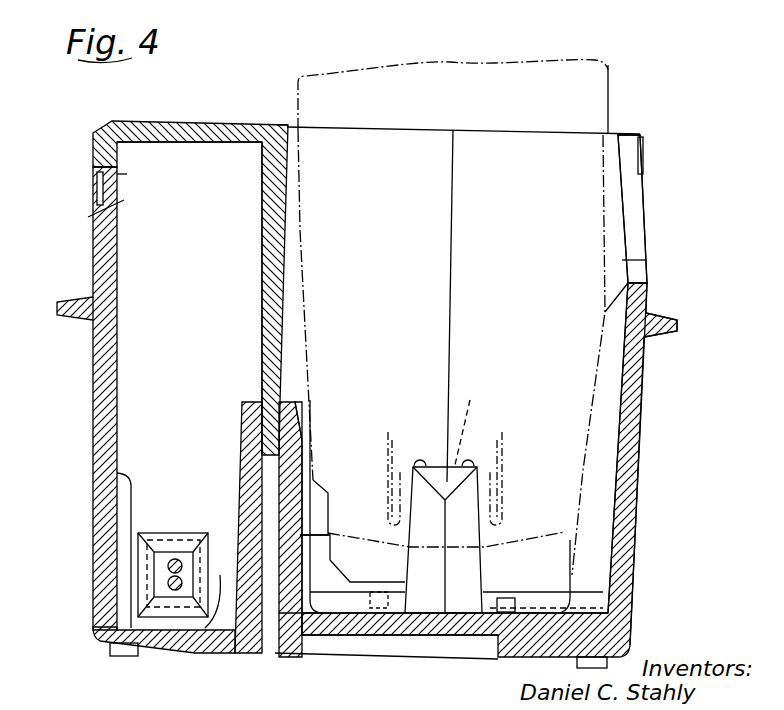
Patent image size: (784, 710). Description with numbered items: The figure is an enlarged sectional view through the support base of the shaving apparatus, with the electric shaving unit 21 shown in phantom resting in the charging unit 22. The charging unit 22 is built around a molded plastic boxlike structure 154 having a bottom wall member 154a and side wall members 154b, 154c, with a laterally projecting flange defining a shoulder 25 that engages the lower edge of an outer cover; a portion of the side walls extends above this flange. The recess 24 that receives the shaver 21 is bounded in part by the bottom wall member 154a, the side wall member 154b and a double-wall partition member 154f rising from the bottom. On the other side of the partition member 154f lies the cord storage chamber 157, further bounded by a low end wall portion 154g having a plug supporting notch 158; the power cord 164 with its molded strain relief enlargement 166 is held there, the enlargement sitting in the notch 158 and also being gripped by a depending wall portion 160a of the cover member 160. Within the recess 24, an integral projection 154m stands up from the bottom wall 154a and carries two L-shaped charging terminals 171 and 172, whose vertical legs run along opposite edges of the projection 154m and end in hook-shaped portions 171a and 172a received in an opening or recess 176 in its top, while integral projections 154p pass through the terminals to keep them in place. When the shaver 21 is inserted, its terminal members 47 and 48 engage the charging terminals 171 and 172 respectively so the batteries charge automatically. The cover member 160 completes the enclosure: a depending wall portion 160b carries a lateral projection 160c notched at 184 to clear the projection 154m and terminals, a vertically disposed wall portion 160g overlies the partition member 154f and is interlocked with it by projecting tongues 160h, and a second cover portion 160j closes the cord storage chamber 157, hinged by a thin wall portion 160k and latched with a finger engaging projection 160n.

The electric shaving unit 21 is at (617, 86).
The charging unit 22 is at (645, 462).
The recess 24 is at (613, 257).
The shoulder 25 is at (663, 318).
The terminal member 47 is at (385, 440).
The terminal member 48 is at (503, 450).
The boxlike structure 154 is at (640, 510).
The bottom wall member 154a is at (433, 628).
The side wall member 154b is at (640, 415).
The side wall member 154c is at (92, 398).
The partition member 154f is at (243, 440).
The low end wall portion 154g is at (193, 650).
The projection 154m is at (482, 490).
The integral projections 154p is at (378, 597).
The cord storage chamber 157 is at (192, 333).
The plug supporting notch 158 is at (150, 583).
The cover member 160 is at (218, 118).
The depending wall portion 160a is at (81, 214).
The depending wall portion 160b is at (532, 148).
The lateral projection 160c is at (323, 596).
The vertically disposed wall portion 160g is at (286, 240).
The projecting tongues 160h is at (258, 410).
The second cover portion 160j is at (160, 128).
The thin wall portion 160k is at (288, 125).
The finger engaging projection 160n is at (93, 140).
The power cord 164 is at (176, 560).
The strain relief enlargement 166 is at (158, 548).
The charging terminal 171 is at (403, 535).
The hook-shaped portion 171a is at (420, 460).
The charging terminal 172 is at (487, 540).
The hook-shaped portion 172a is at (468, 460).
The opening or recess 176 is at (478, 421).
The notch 184 is at (410, 634).